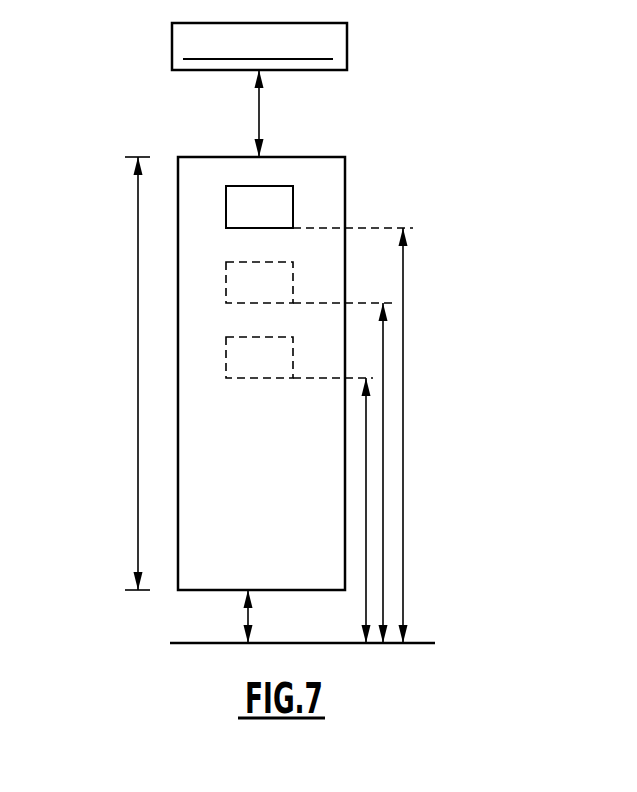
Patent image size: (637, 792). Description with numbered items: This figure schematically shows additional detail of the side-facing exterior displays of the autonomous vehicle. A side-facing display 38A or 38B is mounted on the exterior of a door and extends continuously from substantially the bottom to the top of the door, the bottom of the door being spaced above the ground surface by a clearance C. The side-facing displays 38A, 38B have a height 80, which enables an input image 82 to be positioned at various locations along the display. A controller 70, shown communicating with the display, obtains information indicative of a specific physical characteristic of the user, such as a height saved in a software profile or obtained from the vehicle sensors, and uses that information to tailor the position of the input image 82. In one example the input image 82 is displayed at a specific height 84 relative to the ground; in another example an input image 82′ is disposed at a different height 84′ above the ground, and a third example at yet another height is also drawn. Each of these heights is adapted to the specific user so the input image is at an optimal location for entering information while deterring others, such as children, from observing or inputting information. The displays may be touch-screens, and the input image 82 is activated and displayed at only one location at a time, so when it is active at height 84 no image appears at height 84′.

The controller 70 is at (347, 50).
The side-facing display 38A is at (310, 354).
The side-facing display 38B is at (322, 157).
The input image 82 is at (275, 186).
The input image 82′ is at (275, 261).
The height 84 is at (403, 400).
The height 84′ is at (383, 452).
The height 80 is at (137, 280).
The clearance C is at (247, 618).